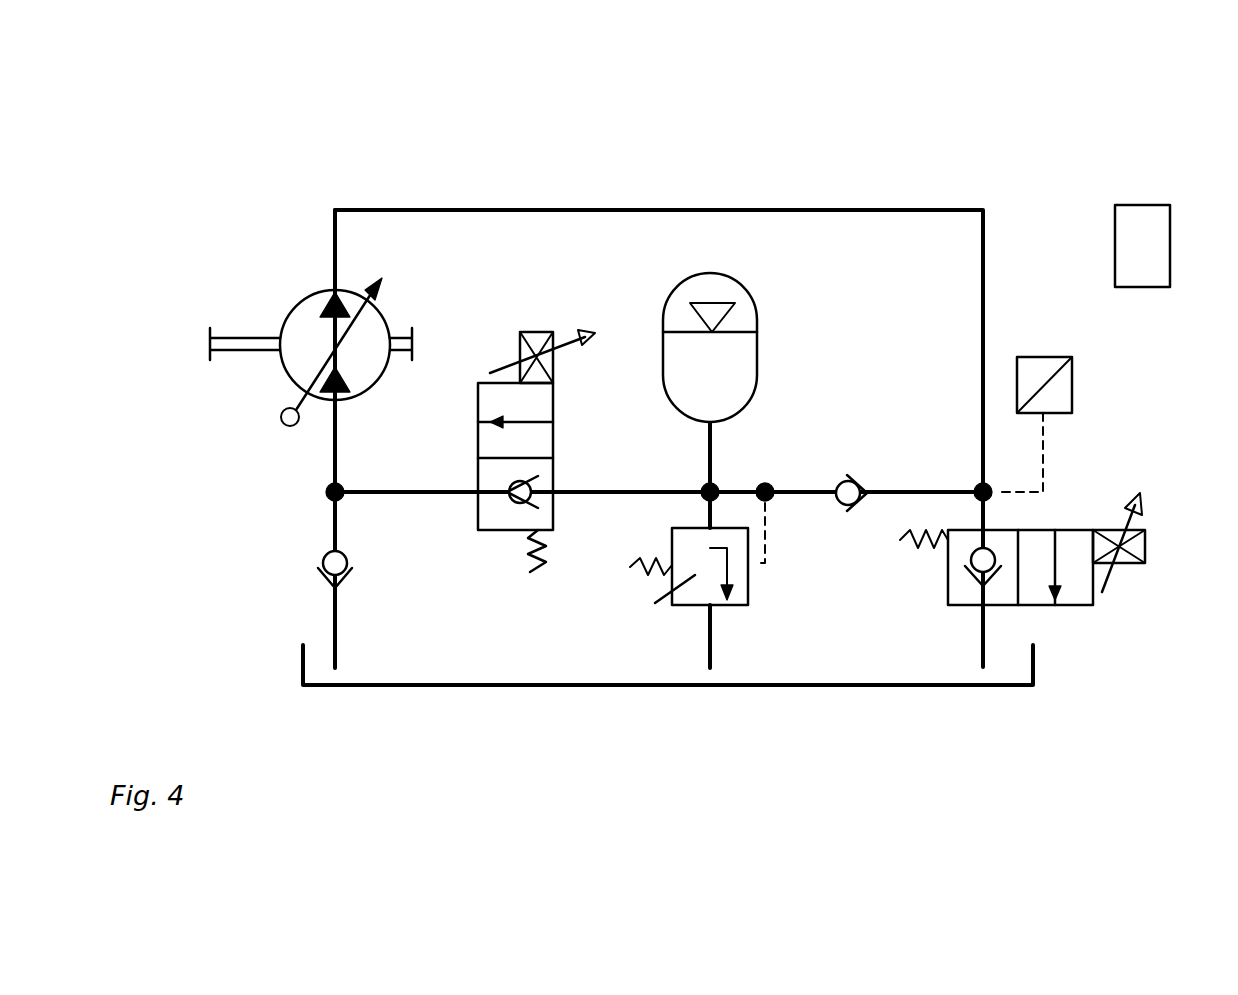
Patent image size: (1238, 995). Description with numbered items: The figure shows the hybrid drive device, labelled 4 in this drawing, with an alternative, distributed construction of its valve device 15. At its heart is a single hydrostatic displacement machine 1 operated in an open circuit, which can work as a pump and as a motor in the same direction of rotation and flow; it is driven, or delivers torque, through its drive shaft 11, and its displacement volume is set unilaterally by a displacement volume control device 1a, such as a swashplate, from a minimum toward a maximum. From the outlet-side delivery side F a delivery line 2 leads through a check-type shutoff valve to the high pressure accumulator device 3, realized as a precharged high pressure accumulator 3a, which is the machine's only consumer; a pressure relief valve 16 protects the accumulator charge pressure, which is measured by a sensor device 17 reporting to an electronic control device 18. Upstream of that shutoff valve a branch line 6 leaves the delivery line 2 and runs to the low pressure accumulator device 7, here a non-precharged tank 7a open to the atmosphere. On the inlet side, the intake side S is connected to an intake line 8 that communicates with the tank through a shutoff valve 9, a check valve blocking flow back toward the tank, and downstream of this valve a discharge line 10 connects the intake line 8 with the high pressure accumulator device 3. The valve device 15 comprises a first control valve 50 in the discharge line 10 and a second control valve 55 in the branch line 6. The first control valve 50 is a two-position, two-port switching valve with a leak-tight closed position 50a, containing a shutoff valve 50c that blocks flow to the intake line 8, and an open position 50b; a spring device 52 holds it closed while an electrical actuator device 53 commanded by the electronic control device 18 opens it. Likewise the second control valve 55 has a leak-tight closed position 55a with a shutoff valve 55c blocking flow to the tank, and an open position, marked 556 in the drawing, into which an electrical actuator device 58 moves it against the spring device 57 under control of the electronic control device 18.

The hydraulic system 4 is at (258, 162).
The hydrostatic displacement machine 1 is at (302, 318).
The displacement volume control device 1a is at (386, 284).
The drive shaft 11 is at (236, 342).
The pressure relief valve 16 is at (280, 415).
The delivery side F is at (340, 284).
The intake side S is at (347, 392).
The delivery line 2 is at (805, 210).
The high pressure accumulator device 3 is at (763, 296).
The high pressure accumulator 3a is at (758, 332).
The intake line 8 is at (330, 522).
The shutoff valve 9 is at (325, 567).
The discharge line 10 is at (595, 492).
The low pressure accumulator device 7 is at (522, 688).
The tank 7a is at (403, 688).
The first control valve 50 is at (497, 535).
The closed position 50a is at (480, 512).
The open position 50b is at (493, 398).
The shutoff valve 50c is at (537, 500).
The spring device 52 is at (530, 572).
The electrical actuator device 53 is at (548, 333).
The valve device 15 is at (470, 548).
The sensor device 17 is at (1072, 385).
The electronic control device 18 is at (1143, 272).
The second control valve 55 is at (942, 599).
The closed position 55a is at (945, 580).
The shutoff valve 55c is at (985, 562).
The valve position 556 is at (1073, 590).
The valve spring 57 is at (900, 541).
The electrical actuator device 58 is at (1130, 545).
The branch line 6 is at (975, 640).